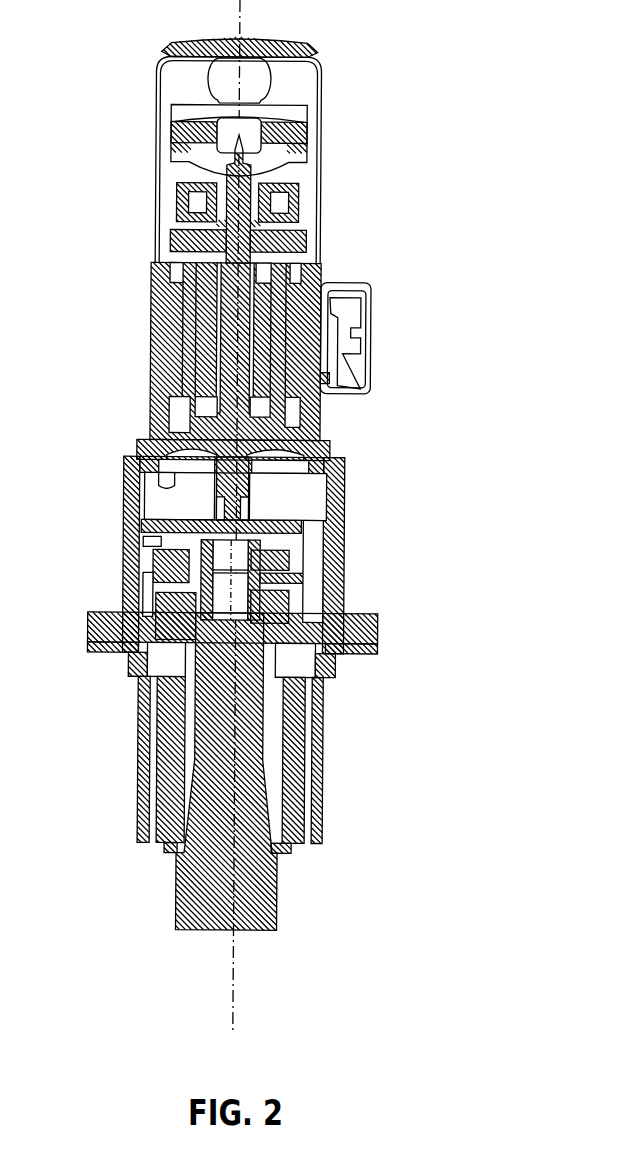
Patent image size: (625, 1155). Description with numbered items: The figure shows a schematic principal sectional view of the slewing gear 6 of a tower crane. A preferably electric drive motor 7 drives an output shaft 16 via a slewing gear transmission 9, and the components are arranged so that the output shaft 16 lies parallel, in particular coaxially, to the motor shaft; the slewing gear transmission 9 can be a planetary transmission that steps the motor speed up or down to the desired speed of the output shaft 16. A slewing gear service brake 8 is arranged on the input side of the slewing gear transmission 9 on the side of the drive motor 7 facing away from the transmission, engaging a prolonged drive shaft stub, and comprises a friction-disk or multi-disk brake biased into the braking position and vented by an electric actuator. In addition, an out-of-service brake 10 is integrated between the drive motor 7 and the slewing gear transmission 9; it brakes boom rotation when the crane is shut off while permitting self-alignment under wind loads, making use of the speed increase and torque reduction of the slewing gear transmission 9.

The slewing gear 6 is at (457, 185).
The drive motor 7 is at (147, 342).
The slewing gear service brake 8 is at (137, 135).
The slewing gear transmission 9 is at (130, 555).
The out-of-service brake 10 is at (340, 425).
The output shaft 16 is at (207, 920).